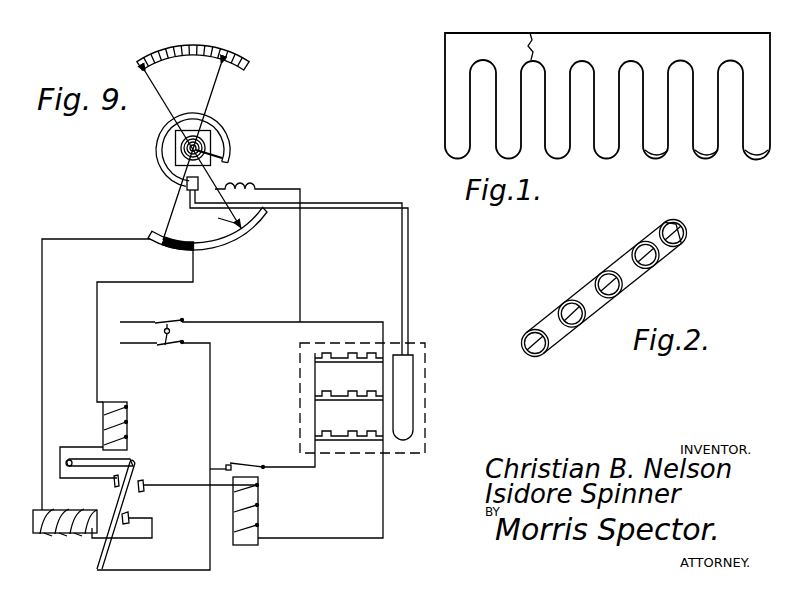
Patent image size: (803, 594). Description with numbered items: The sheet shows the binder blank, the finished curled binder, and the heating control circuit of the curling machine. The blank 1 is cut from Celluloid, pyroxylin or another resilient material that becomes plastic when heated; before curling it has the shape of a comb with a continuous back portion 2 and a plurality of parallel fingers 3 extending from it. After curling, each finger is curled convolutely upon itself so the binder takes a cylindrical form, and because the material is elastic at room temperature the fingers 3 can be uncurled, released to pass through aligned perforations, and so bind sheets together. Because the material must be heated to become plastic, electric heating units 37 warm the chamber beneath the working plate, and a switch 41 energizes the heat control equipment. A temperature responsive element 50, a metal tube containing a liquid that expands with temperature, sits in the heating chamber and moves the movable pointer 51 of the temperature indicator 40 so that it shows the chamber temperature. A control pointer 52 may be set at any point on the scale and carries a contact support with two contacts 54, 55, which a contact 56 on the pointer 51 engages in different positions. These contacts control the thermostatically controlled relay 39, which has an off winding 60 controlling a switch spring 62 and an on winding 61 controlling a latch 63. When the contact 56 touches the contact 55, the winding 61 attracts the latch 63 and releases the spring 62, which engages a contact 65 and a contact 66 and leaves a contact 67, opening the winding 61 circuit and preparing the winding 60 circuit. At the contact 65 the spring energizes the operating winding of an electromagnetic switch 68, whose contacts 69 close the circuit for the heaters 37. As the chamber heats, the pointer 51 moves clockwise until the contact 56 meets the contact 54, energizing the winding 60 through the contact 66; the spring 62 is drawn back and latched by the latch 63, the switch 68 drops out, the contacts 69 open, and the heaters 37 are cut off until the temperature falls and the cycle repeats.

In FIG. 1, the blank 1 is at (448, 53).
In FIG. 2, the blank 1 is at (578, 287).
In FIG. 1, the back portion 2 is at (622, 40).
In FIG. 2, the back portion 2 is at (570, 318).
In FIG. 1, the fingers 3 is at (748, 148).
In FIG. 2, the fingers 3 is at (665, 226).
In FIG. 9, the heating units 37 is at (318, 353).
In FIG. 9, the thermostatically controlled relay 39 is at (87, 432).
In FIG. 9, the temperature indicator 40 is at (147, 157).
In FIG. 9, the switch 41 is at (165, 346).
In FIG. 9, the temperature responsive element 50 is at (407, 383).
In FIG. 9, the movable pointer 51 is at (158, 97).
In FIG. 9, the control pointer 52 is at (215, 82).
In FIG. 9, the contact 54 is at (157, 240).
In FIG. 9, the contact 55 is at (237, 241).
In FIG. 9, the contact 56 is at (236, 227).
In FIG. 9, the off winding 60 is at (63, 527).
In FIG. 9, the on winding 61 is at (120, 421).
In FIG. 9, the switch spring 62 is at (108, 557).
In FIG. 9, the latch 63 is at (123, 460).
In FIG. 9, the contact 65 is at (146, 483).
In FIG. 9, the contact 66 is at (130, 520).
In FIG. 9, the contact 67 is at (114, 481).
In FIG. 9, the electromagnetic switch 68 is at (258, 503).
In FIG. 9, the contacts 69 is at (233, 462).